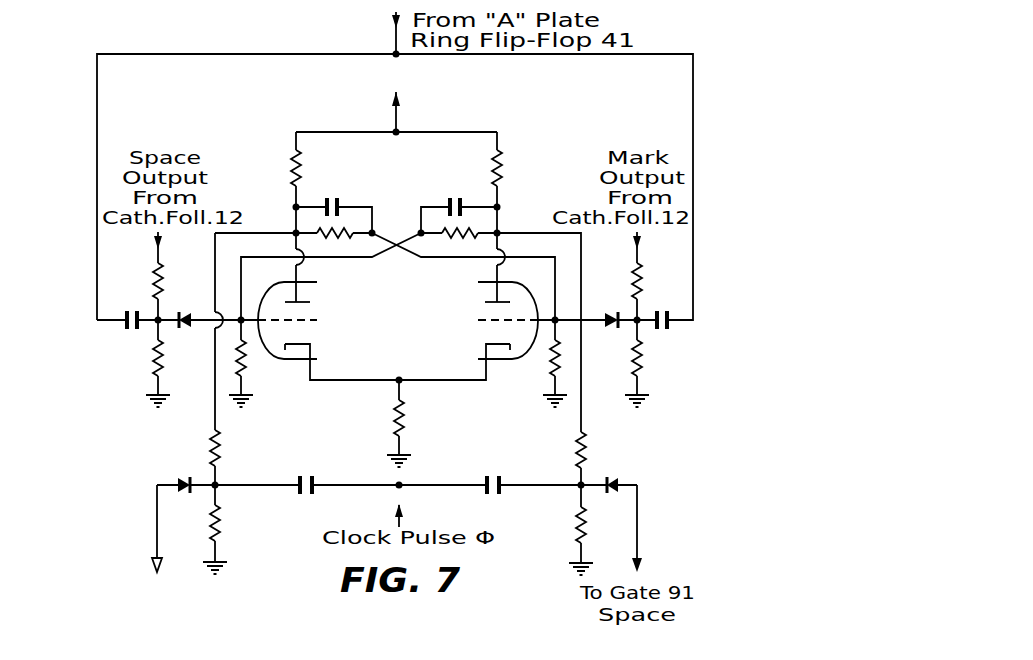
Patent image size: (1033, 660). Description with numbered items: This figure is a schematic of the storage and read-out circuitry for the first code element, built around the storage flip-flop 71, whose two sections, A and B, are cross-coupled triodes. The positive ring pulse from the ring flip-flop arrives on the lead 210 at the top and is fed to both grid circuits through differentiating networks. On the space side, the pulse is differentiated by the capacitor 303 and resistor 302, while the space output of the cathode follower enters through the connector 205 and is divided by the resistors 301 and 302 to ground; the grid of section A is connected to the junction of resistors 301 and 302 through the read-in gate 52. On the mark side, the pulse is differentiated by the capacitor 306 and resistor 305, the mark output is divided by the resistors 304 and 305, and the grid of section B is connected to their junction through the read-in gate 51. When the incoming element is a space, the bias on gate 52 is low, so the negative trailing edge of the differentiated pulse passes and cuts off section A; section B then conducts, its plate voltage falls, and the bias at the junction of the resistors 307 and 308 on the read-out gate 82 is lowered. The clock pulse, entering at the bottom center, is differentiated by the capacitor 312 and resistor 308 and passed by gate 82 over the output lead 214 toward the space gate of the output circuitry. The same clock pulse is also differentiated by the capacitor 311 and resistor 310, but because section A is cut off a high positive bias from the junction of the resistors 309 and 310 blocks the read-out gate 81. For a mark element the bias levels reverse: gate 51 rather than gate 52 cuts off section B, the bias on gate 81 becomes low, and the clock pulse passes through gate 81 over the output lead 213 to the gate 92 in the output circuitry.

The lead from A plate of ring flip-flop 41 210 is at (396, 51).
The connector 205 is at (160, 241).
The resistor 301 is at (157, 292).
The resistor 302 is at (157, 362).
The capacitor 303 is at (131, 329).
The read-in gate 52 is at (192, 328).
The resistor 304 is at (633, 300).
The resistor 305 is at (643, 366).
The capacitor 306 is at (665, 330).
The read-in gate 51 is at (612, 328).
The storage flip-flop 71 is at (412, 365).
The resistor 309 is at (222, 456).
The resistor 310 is at (222, 530).
The read-out gate 81 is at (185, 480).
The output lead to gate mark 92 213 is at (157, 531).
The gate 92 is at (165, 601).
The capacitor 311 is at (302, 477).
The capacitor 312 is at (499, 479).
The resistor 307 is at (587, 456).
The resistor 308 is at (577, 530).
The read-out gate 82 is at (610, 494).
The output lead to gate space 91 214 is at (640, 537).